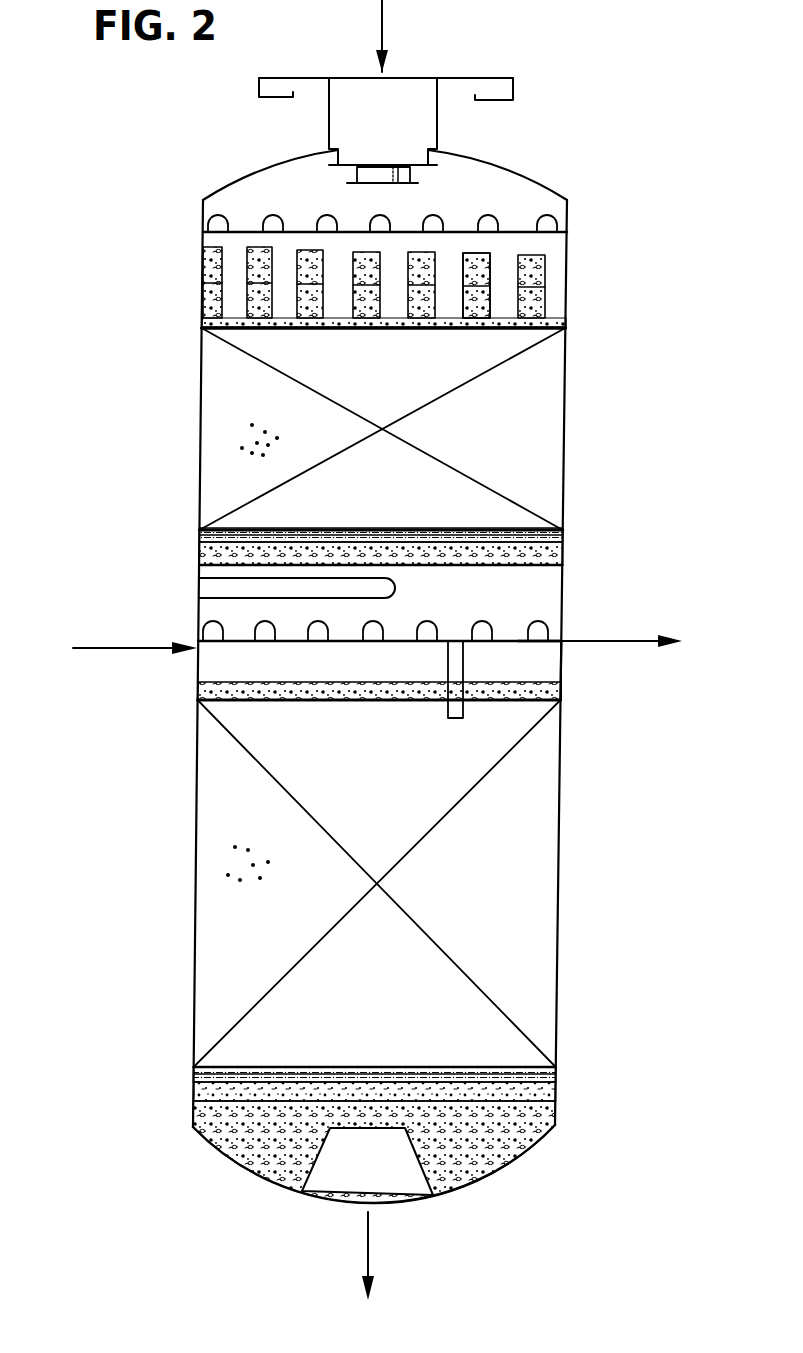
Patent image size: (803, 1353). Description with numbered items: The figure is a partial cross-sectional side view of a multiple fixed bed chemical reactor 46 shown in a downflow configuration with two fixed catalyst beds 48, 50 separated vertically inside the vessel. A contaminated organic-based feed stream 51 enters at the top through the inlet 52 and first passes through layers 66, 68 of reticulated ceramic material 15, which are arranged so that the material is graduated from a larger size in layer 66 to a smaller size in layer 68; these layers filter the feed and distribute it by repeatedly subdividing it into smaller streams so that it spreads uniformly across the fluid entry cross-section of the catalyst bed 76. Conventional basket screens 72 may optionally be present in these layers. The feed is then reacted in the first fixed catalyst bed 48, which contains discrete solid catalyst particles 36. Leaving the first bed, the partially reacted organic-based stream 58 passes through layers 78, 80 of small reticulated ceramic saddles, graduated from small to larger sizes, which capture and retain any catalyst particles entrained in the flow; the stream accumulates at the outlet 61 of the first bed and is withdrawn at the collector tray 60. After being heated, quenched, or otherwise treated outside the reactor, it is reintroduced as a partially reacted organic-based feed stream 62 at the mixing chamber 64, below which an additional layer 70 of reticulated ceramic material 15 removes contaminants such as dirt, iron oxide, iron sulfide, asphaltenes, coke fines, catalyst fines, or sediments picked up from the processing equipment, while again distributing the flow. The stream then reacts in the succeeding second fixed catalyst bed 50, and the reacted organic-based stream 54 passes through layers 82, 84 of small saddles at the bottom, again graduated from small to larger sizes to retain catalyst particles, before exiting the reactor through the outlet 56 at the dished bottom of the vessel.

The reticulated ceramic material 15 is at (545, 307).
The discrete solid catalyst particles 36 is at (247, 438).
The multiple fixed bed chemical reactor 46 is at (198, 408).
The first fixed catalyst bed 48 is at (505, 436).
The second fixed catalyst bed 50 is at (511, 917).
The contaminated organic-based feed stream 51 is at (384, 15).
The inlet 52 is at (372, 165).
The reacted organic-based stream 54 is at (369, 1237).
The outlet 56 is at (356, 1140).
The partially reacted organic-based stream 58 is at (610, 640).
The collector tray 60 is at (518, 642).
The outlet of the first fixed bed 61 is at (563, 645).
The partially reacted organic-based feed stream 62 is at (118, 648).
The mixing chamber 64 is at (226, 661).
The layer of reticulated ceramic material 66 is at (252, 270).
The layer of reticulated ceramic material 68 is at (200, 314).
The additional layer of reticulated ceramic material 70 is at (197, 697).
The basket screens 72 is at (496, 270).
The catalyst bed 76 is at (340, 330).
The layer of reticulated ceramic material saddles 78 is at (223, 523).
The layer of reticulated ceramic material saddles 80 is at (200, 570).
The layer of reticulated ceramic material saddles 82 is at (233, 1067).
The layer of reticulated ceramic material saddles 84 is at (210, 1137).